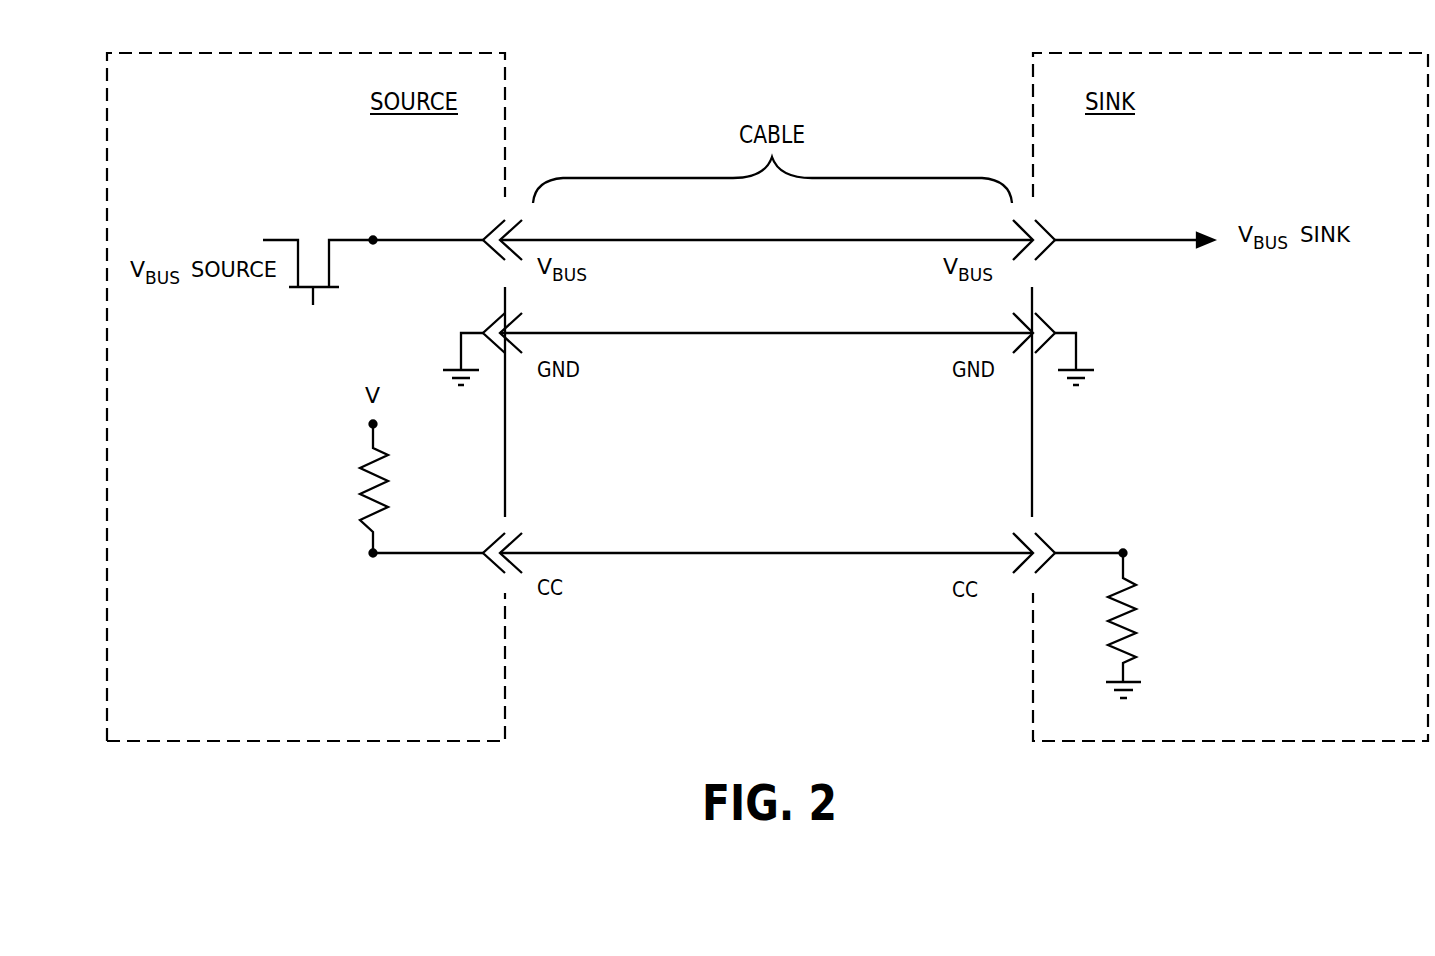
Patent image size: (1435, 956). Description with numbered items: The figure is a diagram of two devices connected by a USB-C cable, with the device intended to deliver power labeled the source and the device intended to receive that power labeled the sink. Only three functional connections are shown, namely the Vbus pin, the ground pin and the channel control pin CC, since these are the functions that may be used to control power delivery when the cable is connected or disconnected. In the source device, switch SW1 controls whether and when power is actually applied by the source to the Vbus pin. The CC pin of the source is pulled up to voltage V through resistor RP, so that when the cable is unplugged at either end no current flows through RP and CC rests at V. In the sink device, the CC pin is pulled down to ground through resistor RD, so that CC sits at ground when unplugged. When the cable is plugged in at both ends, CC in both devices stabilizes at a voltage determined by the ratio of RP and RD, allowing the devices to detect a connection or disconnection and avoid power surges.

The switch SW1 is at (373, 253).
The resistor Rp RP is at (400, 489).
The resistor Rd RD is at (1115, 624).